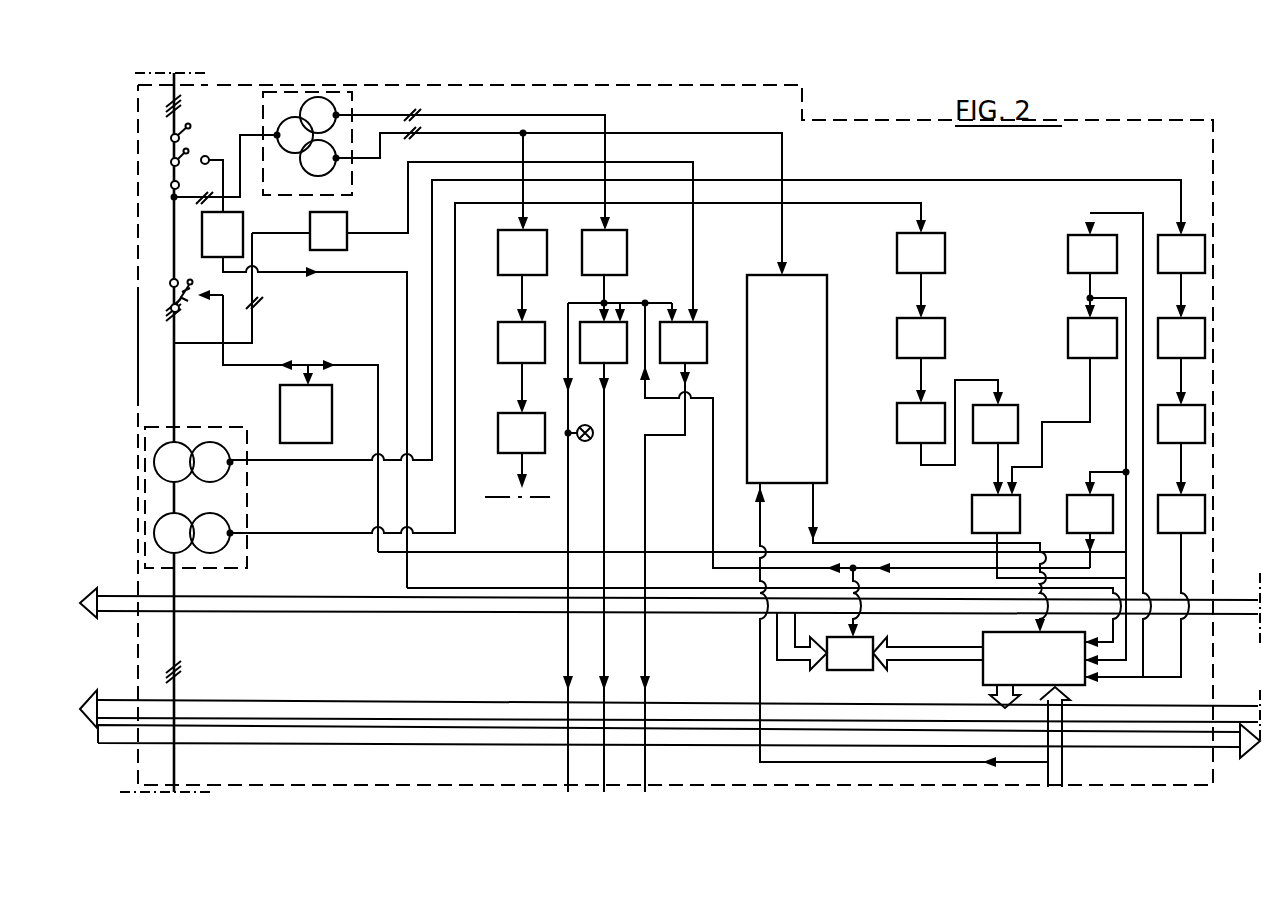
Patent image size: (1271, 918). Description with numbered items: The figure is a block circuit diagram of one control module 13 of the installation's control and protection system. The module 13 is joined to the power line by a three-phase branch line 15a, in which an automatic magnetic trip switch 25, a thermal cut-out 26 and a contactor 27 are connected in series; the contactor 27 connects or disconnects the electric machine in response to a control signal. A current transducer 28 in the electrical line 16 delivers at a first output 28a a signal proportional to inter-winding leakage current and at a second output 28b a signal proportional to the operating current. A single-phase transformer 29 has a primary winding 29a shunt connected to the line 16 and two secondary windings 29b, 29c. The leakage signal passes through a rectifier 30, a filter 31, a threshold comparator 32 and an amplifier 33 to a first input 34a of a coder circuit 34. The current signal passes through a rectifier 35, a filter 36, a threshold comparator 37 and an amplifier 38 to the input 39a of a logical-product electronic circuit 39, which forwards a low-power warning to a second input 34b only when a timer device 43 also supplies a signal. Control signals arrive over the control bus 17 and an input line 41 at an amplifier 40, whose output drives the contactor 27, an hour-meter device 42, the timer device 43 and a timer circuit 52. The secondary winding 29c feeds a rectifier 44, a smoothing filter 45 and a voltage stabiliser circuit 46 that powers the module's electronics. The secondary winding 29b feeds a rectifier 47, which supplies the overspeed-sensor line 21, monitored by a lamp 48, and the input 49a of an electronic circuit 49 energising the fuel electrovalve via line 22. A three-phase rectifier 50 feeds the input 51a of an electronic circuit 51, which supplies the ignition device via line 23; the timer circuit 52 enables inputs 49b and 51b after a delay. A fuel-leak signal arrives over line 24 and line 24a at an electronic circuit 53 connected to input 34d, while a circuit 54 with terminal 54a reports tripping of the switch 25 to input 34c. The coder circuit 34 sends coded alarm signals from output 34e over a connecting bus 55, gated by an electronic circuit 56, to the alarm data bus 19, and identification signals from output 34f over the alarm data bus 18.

The control module 13 is at (137, 342).
The three-phase branch line 15a is at (160, 80).
The electrical line 16 is at (173, 250).
The control bus 17 is at (328, 738).
The alarm data bus 18 is at (256, 686).
The alarm data bus 19 is at (226, 605).
The line 21 is at (562, 636).
The line 22 is at (563, 658).
The line 23 is at (650, 662).
The line 24 is at (1047, 775).
The line 24a is at (757, 683).
The automatic magnetic trip switch 25 is at (170, 150).
The thermal cut-out 26 is at (172, 176).
The contactor 27 is at (177, 298).
The current transducer 28 is at (641, 374).
The first output 28a is at (240, 466).
The second output 28b is at (243, 531).
The single-phase transformer 29 is at (317, 151).
The primary winding 29a is at (277, 132).
The secondary winding 29b is at (338, 113).
The secondary winding 29c is at (320, 178).
The rectifier 30 is at (1205, 250).
The filter 31 is at (1200, 335).
The threshold comparator 32 is at (1200, 420).
The amplifier 33 is at (1200, 508).
The coder circuit 34 is at (1023, 700).
The first input 34a is at (1080, 690).
The second input 34b is at (1100, 678).
The input 34c is at (1080, 643).
The input 34d is at (1030, 636).
The output 34e is at (985, 660).
The output 34f is at (995, 690).
The rectifier 35 is at (932, 233).
The filter 36 is at (933, 318).
The threshold comparator 37 is at (897, 412).
The amplifier 38 is at (1010, 405).
The electronic circuit 39 is at (978, 520).
The input 39a is at (1022, 503).
The amplifier 40 is at (1068, 258).
The input line 41 is at (1140, 655).
The hour-meter device 42 is at (318, 410).
The timer device 43 is at (1068, 330).
The rectifier 44 is at (503, 233).
The smoothing filter 45 is at (498, 340).
The voltage stabiliser circuit 46 is at (507, 423).
The rectifier 47 is at (627, 238).
The lamp 48 is at (586, 442).
The electronic circuit 49 is at (610, 355).
The input 49a is at (597, 330).
The input 49b is at (620, 328).
The three-phase rectifier 50 is at (332, 250).
The electronic circuit 51 is at (700, 358).
The input 51a is at (697, 330).
The input 51b is at (670, 330).
The timer circuit 52 is at (1076, 495).
The electronic circuit 53 is at (800, 290).
The circuit 54 is at (238, 228).
The terminal 54a is at (207, 156).
The connecting bus 55 is at (788, 655).
The electronic circuit 56 is at (870, 640).